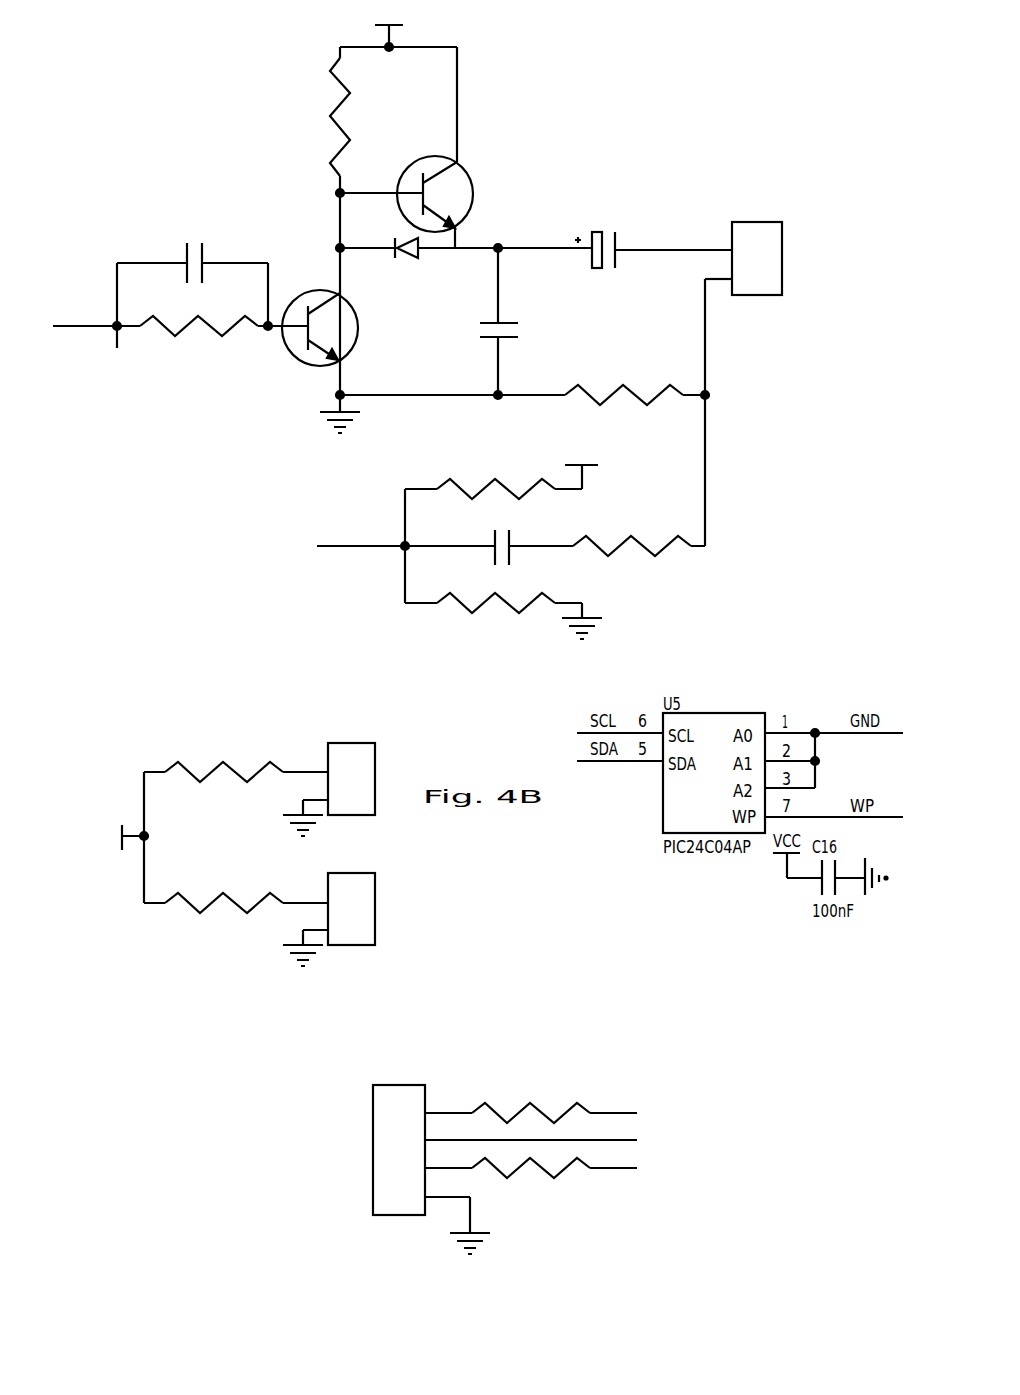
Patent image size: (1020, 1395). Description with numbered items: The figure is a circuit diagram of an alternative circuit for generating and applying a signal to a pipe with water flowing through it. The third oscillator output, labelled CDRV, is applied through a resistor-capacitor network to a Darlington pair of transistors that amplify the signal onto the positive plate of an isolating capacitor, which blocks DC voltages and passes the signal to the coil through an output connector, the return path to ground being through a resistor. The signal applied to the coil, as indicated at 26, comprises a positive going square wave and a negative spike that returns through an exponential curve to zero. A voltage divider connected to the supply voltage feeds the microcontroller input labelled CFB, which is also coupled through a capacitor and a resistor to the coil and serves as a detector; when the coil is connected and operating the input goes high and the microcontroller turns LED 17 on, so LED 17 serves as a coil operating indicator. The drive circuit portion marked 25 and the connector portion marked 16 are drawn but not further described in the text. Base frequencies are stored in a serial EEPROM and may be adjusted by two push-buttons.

The coil drive circuit 25 is at (392, 319).
The signal applied to the coil 26 is at (798, 299).
The LED 17 is at (216, 847).
The interface connector circuit 16 is at (504, 1159).